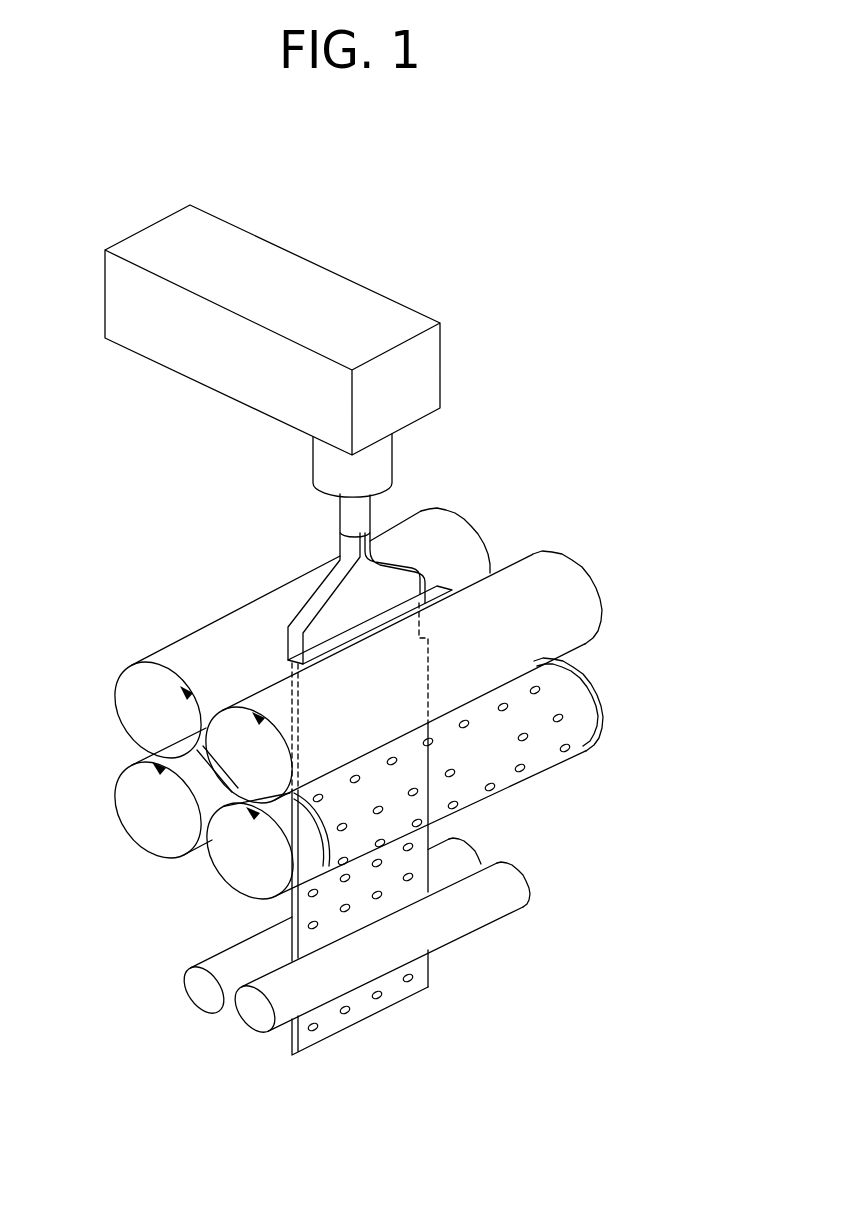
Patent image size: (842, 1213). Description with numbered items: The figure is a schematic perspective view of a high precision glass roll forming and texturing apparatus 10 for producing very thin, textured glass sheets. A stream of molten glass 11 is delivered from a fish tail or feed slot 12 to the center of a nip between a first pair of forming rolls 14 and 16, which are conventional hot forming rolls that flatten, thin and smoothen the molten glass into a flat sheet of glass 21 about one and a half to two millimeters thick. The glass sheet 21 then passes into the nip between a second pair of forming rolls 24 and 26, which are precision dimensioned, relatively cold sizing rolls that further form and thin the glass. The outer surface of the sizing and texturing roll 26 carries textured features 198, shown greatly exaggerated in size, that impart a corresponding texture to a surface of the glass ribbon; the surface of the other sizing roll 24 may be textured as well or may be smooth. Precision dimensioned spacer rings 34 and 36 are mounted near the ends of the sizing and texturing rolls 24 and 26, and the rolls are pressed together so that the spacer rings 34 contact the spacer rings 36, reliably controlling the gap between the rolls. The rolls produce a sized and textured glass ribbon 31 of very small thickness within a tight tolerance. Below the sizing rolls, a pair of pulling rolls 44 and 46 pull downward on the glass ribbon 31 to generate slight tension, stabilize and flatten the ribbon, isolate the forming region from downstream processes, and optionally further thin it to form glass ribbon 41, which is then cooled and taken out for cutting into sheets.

The high precision glass roll forming apparatus 10 is at (524, 287).
The stream of molten glass 11 is at (298, 668).
The feed slot 12 is at (383, 575).
The first forming roll 14 is at (460, 532).
The first forming roll 16 is at (560, 580).
The flat sheet of glass 21 is at (405, 682).
The sizing roll 24 is at (157, 835).
The sizing and texturing roll 26 is at (250, 880).
The sized and textured glass ribbon 31 is at (417, 840).
The spacer ring 34 is at (200, 757).
The spacer ring 36 is at (578, 700).
The glass ribbon 41 is at (413, 982).
The pulling roll 44 is at (190, 990).
The pulling roll 46 is at (518, 880).
The textured features 198 is at (527, 742).